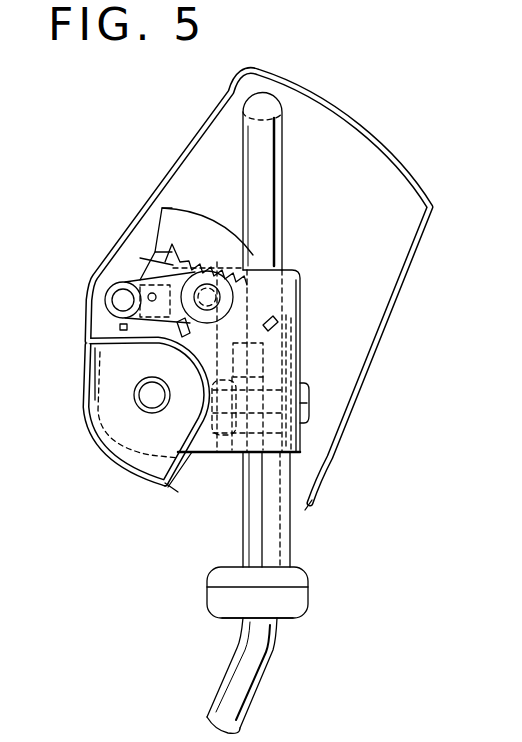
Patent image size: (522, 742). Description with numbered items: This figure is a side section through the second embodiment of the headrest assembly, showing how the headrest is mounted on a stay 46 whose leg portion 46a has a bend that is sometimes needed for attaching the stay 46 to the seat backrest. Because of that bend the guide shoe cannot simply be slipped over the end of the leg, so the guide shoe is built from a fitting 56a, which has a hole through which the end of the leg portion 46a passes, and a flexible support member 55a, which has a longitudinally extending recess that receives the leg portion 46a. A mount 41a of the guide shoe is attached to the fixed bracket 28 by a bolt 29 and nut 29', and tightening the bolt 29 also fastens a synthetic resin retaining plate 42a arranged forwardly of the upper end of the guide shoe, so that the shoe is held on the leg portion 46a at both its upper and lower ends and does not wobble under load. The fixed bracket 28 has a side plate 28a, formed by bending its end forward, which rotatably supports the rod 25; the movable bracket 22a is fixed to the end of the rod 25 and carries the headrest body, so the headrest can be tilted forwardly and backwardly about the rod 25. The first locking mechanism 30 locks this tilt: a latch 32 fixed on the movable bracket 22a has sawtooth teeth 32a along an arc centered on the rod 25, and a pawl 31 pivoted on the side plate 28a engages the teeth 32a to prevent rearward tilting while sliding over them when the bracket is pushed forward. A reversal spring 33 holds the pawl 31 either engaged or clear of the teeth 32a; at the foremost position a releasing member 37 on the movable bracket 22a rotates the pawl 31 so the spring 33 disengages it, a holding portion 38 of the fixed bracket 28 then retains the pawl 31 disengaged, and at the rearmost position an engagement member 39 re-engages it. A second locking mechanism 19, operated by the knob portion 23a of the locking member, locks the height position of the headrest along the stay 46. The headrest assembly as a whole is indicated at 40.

The second locking mechanism 19 is at (322, 589).
The movable bracket 22a is at (412, 176).
The knob portion 23a is at (300, 605).
The rod 25 is at (136, 393).
The fixed bracket 28 is at (296, 274).
The side plate 28a is at (178, 476).
The bolt 29 is at (357, 403).
The nut 29' is at (314, 416).
The first locking mechanism 30 is at (143, 238).
The pawl 31 is at (150, 282).
The latch 32 is at (175, 215).
The teeth 32a is at (195, 250).
The reversal spring 33 is at (104, 294).
The releasing member 37 is at (276, 317).
The holding portion 38 is at (117, 328).
The engagement member 39 is at (148, 292).
The locking assembly 40 is at (385, 122).
The mount 41a is at (303, 330).
The retaining plate 42a is at (303, 368).
The stay 46 is at (264, 110).
The leg portion 46a is at (240, 657).
The flexible support member 55a is at (300, 520).
The fitting 56a is at (300, 575).